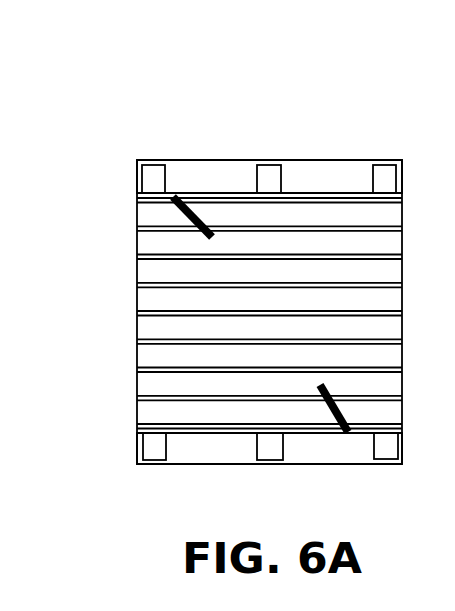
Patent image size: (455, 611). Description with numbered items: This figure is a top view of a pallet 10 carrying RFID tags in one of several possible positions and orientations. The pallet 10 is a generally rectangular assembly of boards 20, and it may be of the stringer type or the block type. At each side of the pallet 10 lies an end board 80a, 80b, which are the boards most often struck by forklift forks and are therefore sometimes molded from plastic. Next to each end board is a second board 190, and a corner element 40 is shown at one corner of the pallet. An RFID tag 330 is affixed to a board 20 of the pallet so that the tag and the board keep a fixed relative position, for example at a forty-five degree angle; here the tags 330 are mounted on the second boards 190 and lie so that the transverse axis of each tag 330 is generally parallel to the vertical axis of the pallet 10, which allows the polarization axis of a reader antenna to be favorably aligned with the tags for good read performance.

The pallet 10 is at (348, 138).
The board 20 is at (170, 190).
The corner pad 40 is at (385, 177).
The top end region 80a is at (238, 175).
The bottom end region 80b is at (208, 450).
The second board 190 is at (297, 215).
The RFID tag 330 is at (190, 207).